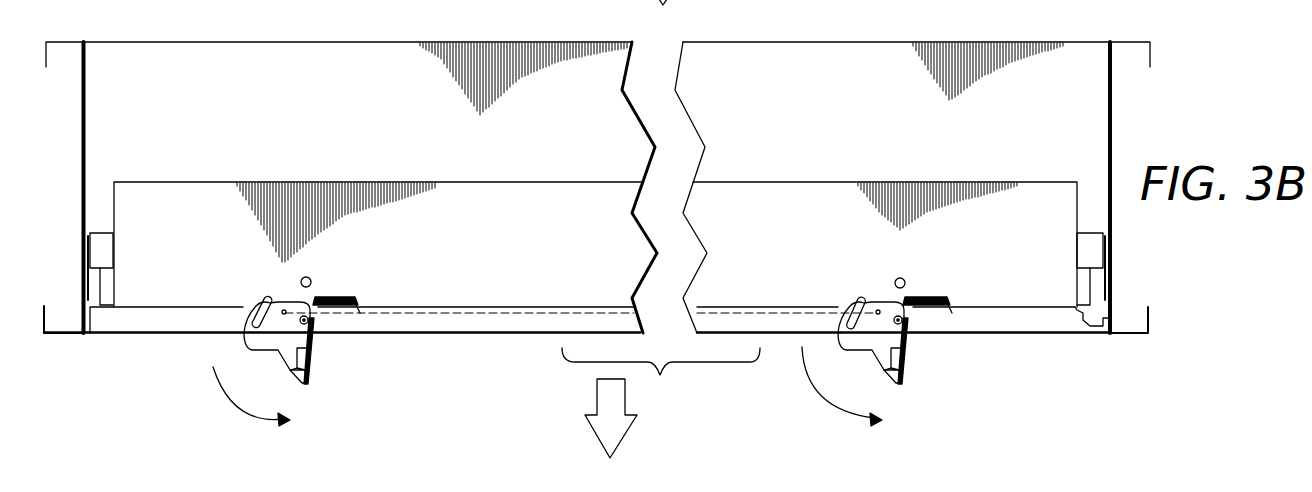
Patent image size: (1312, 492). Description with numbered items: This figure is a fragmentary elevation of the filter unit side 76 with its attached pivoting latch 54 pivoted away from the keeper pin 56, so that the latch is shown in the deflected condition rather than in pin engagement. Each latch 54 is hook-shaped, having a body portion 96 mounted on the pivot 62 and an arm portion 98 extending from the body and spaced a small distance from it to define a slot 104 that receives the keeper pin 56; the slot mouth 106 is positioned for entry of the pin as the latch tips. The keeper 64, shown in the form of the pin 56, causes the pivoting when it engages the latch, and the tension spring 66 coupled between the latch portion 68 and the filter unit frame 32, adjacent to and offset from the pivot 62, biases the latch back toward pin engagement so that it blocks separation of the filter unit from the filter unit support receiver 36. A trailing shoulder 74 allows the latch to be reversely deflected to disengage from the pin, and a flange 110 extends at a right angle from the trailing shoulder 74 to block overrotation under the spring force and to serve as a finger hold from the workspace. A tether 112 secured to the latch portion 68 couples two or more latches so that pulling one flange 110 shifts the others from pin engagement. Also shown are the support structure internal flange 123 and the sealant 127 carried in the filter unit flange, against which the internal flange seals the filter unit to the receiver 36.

The filter unit frame 32 is at (1077, 182).
The filter unit support receiver 36 is at (1088, 42).
The latch 54 is at (897, 338).
The keeper pin 56 is at (274, 294).
The pivot 62 is at (310, 320).
The keeper 64 is at (313, 265).
The tension spring 66 is at (347, 295).
The latch portion 68 is at (948, 297).
The trailing shoulder 74 is at (300, 340).
The filter unit side 76 is at (753, 223).
The body portion 96 is at (208, 343).
The arm portion 98 is at (155, 322).
The slot 104 is at (255, 315).
The slot mouth 106 is at (277, 296).
The flange 110 is at (297, 337).
The tether 112 is at (508, 310).
The internal flange 123 is at (88, 283).
The sealant 127 is at (1100, 325).